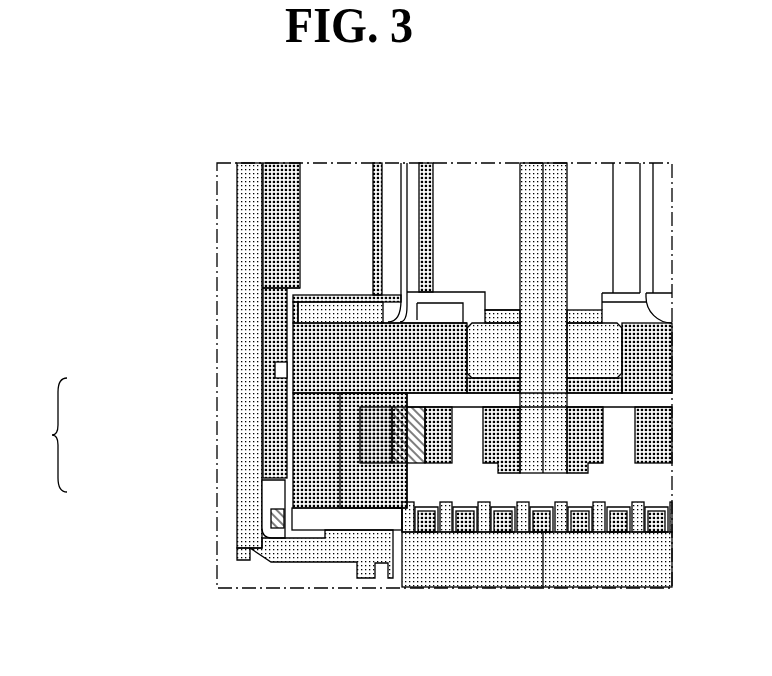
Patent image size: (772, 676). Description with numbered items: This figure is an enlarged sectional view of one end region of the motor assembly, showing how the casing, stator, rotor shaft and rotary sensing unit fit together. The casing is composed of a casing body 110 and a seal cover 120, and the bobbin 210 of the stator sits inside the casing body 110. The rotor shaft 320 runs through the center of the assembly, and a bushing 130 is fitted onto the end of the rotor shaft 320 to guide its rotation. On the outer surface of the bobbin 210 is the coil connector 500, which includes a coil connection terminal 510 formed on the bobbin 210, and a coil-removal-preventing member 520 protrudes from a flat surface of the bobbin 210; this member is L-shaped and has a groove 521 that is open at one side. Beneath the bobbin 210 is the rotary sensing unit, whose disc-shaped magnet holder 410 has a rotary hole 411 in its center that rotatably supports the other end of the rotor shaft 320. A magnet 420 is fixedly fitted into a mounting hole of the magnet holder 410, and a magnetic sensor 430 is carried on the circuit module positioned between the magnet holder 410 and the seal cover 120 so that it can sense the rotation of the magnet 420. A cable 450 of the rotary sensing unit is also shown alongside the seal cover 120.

The casing body 110 is at (243, 288).
The seal cover 120 is at (318, 553).
The bushing 130 is at (605, 354).
The bobbin 210 is at (303, 346).
The rotor shaft 320 is at (557, 213).
The magnet holder 410 is at (655, 437).
The rotary hole 411 is at (395, 457).
The magnet 420 is at (395, 417).
The magnetic sensor 430 is at (660, 521).
The cable 450 is at (505, 570).
The coil connector 500 is at (39, 435).
The coil connection terminal 510 is at (280, 370).
The coil-removal-preventing member 520 is at (272, 500).
The groove 521 is at (271, 521).